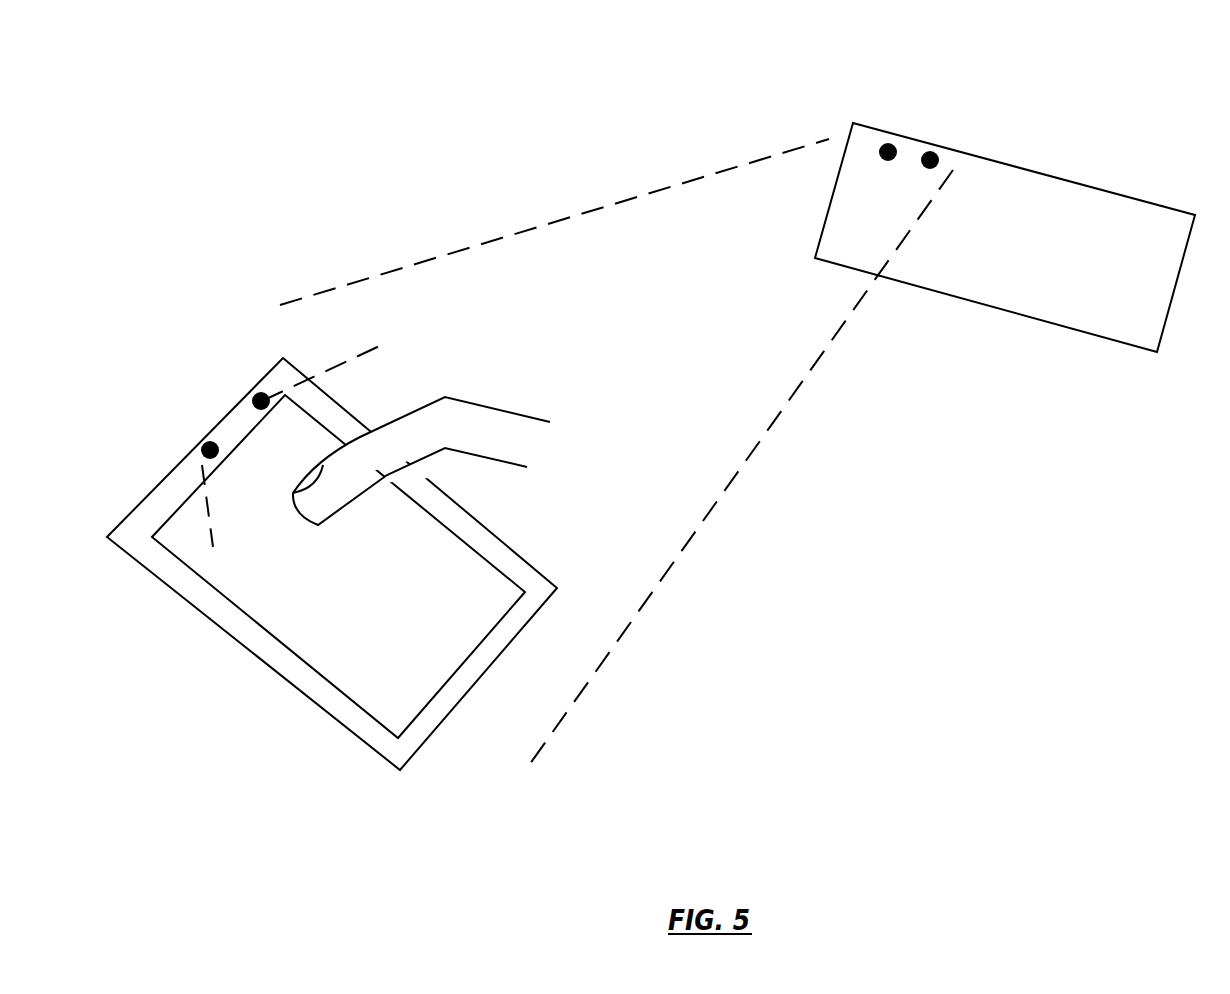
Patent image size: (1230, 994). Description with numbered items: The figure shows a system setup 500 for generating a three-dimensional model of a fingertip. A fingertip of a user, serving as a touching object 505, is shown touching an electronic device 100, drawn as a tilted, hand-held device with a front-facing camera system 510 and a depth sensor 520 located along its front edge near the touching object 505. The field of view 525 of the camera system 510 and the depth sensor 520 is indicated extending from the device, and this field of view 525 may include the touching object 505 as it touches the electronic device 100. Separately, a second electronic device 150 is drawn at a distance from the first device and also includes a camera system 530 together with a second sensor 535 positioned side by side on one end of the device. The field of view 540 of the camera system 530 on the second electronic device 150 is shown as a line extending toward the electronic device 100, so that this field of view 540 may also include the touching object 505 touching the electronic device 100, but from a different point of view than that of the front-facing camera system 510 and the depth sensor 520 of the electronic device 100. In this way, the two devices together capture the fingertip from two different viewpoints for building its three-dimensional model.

The system / environment 500 is at (387, 72).
The electronic device 100 is at (142, 508).
The touching object 505 is at (473, 402).
The front-facing camera system 510 is at (200, 445).
The depth sensor 520 is at (253, 395).
The field of view 525 is at (215, 498).
The field of view 540 is at (620, 202).
The second electronic device 150 is at (1178, 297).
The camera system 530 is at (895, 145).
The second remote point 535 is at (939, 157).